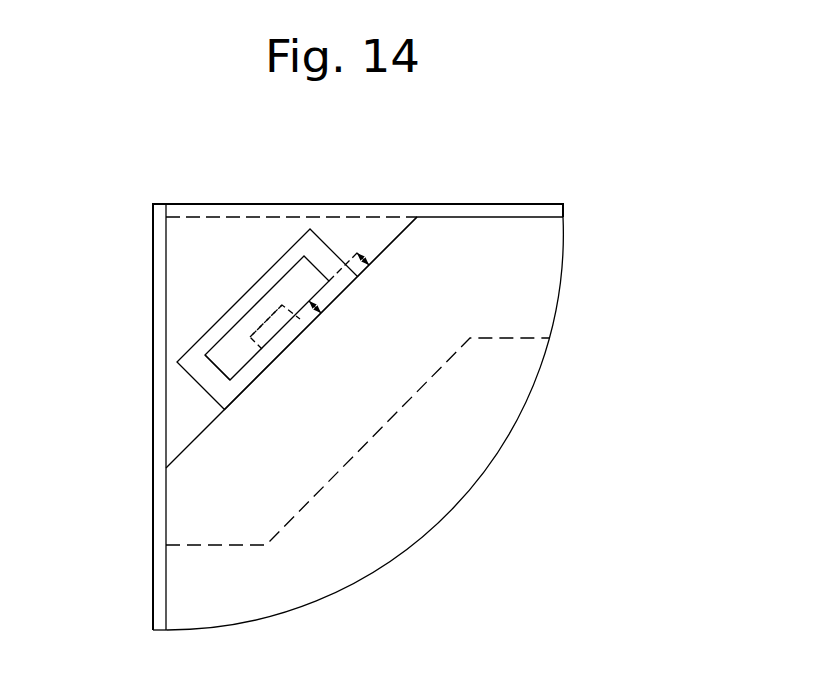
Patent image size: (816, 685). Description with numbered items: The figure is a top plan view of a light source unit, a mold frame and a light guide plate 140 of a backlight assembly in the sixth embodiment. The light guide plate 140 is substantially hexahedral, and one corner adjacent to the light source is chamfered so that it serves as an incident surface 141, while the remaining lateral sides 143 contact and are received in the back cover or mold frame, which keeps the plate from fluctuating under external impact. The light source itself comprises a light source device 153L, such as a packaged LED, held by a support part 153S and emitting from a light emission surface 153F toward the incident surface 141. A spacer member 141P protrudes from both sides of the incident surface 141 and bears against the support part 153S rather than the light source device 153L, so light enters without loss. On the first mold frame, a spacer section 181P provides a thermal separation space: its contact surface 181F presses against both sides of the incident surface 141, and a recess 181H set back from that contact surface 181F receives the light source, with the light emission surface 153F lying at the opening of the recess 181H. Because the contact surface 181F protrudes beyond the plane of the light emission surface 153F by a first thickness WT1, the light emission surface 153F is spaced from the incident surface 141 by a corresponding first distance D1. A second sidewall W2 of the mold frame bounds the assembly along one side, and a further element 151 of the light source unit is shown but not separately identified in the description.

The light guide plate 140 is at (497, 427).
The incident surface 141 is at (277, 361).
The spacer member 141P is at (208, 445).
The lateral sides 143 is at (495, 203).
The sealing member 151 is at (180, 407).
The light source device 153L is at (276, 316).
The light emission surface 153F is at (267, 336).
The support part 153S is at (232, 357).
The recess 181H is at (282, 276).
The spacer section 181P is at (325, 258).
The contact surface 181F is at (388, 245).
The second sidewall W2 is at (158, 523).
The first distance D1 is at (316, 308).
The first thickness WT1 is at (363, 260).